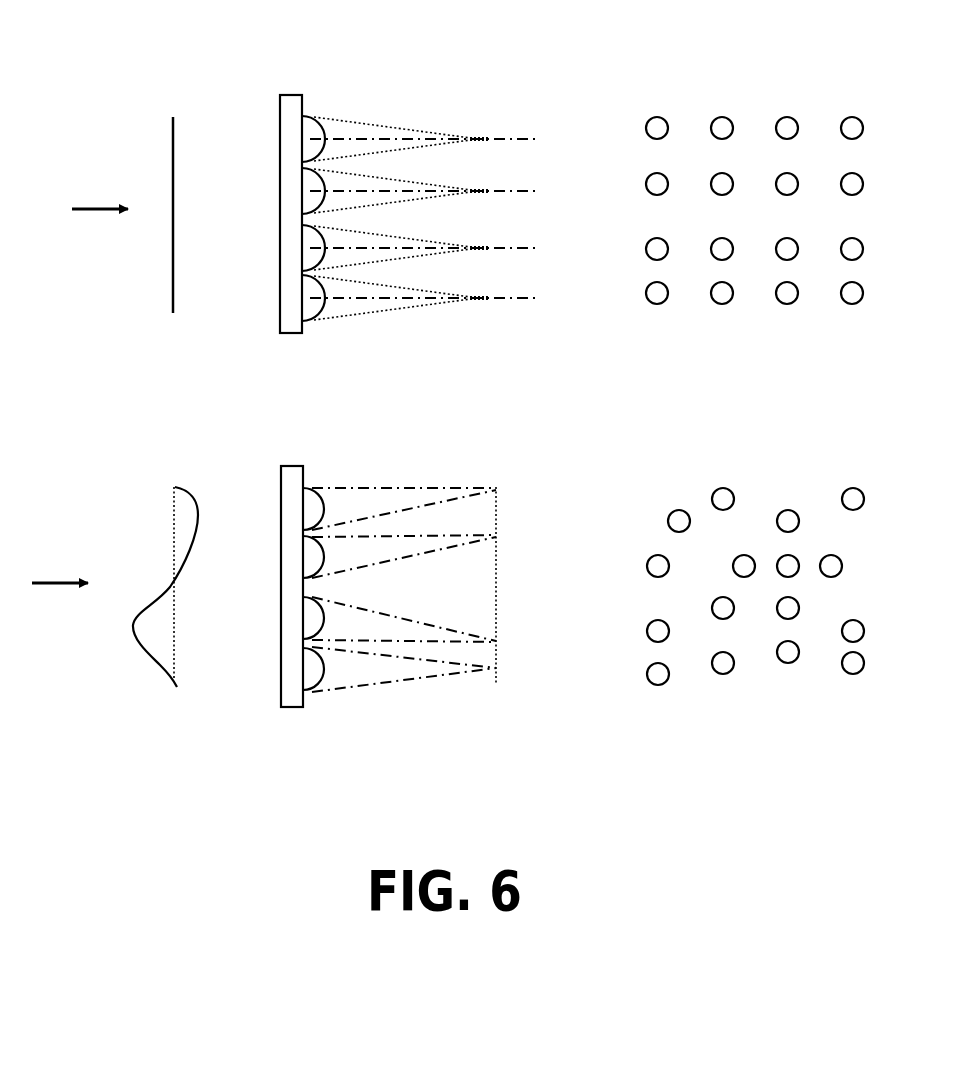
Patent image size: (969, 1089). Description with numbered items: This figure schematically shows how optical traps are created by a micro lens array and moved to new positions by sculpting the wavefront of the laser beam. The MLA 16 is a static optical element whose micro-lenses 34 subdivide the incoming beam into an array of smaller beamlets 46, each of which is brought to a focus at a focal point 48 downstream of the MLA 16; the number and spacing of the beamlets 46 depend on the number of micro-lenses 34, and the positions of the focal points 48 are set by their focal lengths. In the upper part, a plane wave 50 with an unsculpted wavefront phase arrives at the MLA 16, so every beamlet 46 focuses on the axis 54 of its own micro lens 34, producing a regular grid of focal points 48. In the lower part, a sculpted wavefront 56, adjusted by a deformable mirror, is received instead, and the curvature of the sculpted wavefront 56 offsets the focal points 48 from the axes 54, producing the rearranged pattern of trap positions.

The micro lens array (MLA) 16 is at (290, 96).
The micro-lenses 34 is at (312, 117).
The beamlets 46 is at (400, 123).
The focal point 48 is at (487, 130).
The plane wave 50 is at (172, 130).
The axis of MLA micro lens 54 is at (535, 305).
The sculpted wavefront phase 56 is at (148, 597).